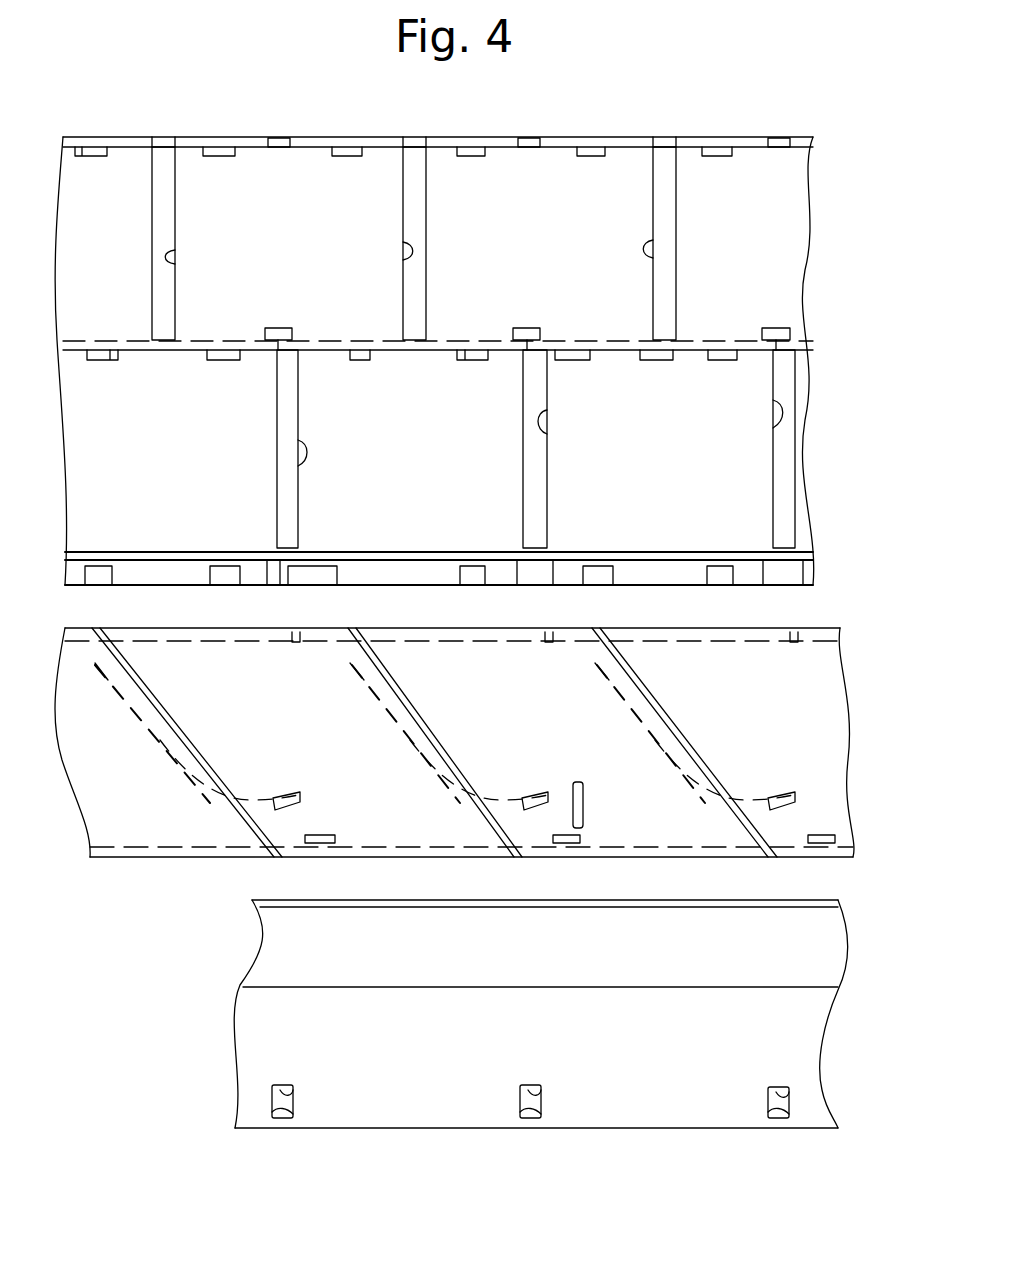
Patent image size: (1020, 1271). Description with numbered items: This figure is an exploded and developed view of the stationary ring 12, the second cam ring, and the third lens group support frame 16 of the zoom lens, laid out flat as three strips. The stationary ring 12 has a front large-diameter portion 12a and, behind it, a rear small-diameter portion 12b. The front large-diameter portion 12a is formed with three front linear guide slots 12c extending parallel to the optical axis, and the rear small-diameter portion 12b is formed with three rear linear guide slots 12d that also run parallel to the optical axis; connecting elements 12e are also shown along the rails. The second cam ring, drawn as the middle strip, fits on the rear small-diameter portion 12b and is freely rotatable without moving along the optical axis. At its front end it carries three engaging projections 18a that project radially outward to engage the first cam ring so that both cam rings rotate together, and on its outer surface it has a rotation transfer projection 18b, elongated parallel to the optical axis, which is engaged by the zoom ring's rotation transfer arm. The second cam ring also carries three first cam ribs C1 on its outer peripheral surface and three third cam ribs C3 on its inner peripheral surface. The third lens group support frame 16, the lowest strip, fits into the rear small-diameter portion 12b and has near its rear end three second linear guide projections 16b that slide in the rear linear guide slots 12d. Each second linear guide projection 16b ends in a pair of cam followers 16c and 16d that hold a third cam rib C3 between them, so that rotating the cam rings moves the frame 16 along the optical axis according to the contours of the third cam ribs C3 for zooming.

The stationary ring 12 is at (800, 266).
The front large-diameter portion 12a is at (770, 296).
The rear small-diameter portion 12b is at (745, 466).
The front linear guide slots 12c is at (426, 250).
The rear linear guide slots 12d is at (300, 470).
The rail connector 12e is at (290, 147).
The third lens group support frame 16 is at (780, 1028).
The second linear guide projections 16b is at (312, 1105).
The cam follower 16c is at (288, 1088).
The cam follower 16d is at (280, 1118).
The engaging projections 18a is at (300, 634).
The rotation transfer projection 18b is at (580, 782).
The first cam ribs C1 is at (195, 738).
The third cam ribs C3 is at (400, 748).